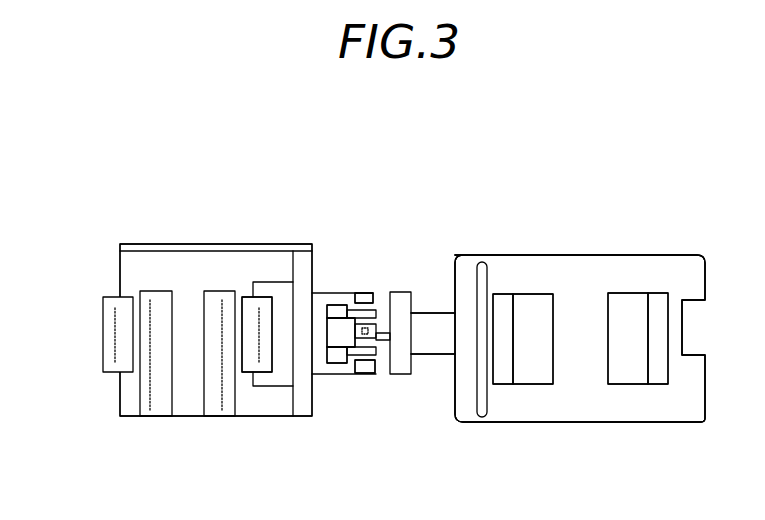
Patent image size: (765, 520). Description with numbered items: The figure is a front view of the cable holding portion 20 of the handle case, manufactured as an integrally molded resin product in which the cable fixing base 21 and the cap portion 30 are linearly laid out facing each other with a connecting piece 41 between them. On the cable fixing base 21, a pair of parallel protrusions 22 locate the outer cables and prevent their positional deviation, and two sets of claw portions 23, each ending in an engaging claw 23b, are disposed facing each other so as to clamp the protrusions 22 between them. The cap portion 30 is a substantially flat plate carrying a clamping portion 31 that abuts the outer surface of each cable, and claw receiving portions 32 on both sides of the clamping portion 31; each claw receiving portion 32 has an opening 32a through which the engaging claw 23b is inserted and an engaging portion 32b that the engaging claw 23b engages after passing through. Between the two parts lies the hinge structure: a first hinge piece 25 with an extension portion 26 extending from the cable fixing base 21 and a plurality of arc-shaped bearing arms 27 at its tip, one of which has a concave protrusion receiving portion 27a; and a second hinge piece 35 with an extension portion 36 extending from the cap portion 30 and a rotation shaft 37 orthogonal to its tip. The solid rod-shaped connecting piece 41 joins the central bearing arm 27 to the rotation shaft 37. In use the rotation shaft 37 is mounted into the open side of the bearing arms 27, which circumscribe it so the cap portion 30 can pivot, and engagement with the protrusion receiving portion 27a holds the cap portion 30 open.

The cable holding portion 20 is at (402, 225).
The cable fixing base 21 is at (193, 277).
The protrusions 22 is at (210, 398).
The claw portion 23 is at (267, 334).
The engaging claw 23b is at (85, 345).
The first hinge piece 25 is at (353, 270).
The extension portion 26 is at (327, 293).
The bearing arms 27 is at (375, 298).
The protrusion receiving portion 27a is at (370, 297).
The cap portion 30 is at (637, 253).
The clamping portion 31 is at (578, 317).
The claw receiving portions 32 is at (550, 282).
The opening 32a is at (535, 362).
The engaging portion 32b is at (515, 320).
The second hinge piece 35 is at (413, 383).
The extension portion 36 is at (440, 353).
The rotation shaft 37 is at (398, 378).
The connecting piece 41 is at (379, 345).